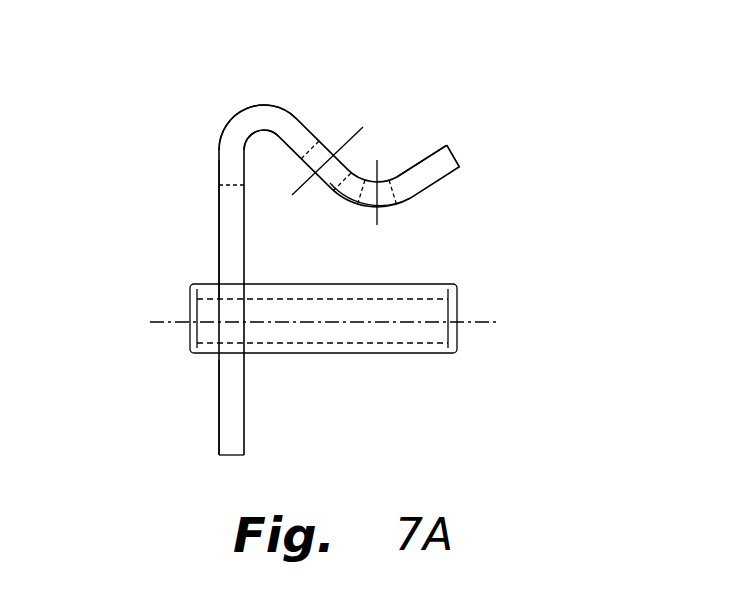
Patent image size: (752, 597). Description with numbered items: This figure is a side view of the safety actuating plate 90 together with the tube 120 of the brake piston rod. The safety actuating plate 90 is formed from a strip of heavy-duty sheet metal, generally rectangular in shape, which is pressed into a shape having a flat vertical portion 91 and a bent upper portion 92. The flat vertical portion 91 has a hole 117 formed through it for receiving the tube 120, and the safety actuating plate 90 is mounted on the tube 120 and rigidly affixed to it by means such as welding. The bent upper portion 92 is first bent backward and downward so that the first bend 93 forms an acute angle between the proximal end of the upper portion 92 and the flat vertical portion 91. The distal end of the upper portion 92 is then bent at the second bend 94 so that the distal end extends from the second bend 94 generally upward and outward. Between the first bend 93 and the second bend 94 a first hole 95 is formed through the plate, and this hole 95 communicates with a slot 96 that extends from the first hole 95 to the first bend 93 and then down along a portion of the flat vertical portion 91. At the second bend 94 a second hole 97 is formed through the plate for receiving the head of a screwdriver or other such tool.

The safety actuating plate 90 is at (222, 432).
The flat vertical portion 91 is at (225, 377).
The bent upper portion 92 is at (300, 100).
The first bend 93 is at (258, 132).
The second bend 94 is at (380, 208).
The first hole 95 is at (318, 137).
The slot 96 is at (217, 160).
The second hole 97 is at (385, 178).
The hole 117 is at (212, 283).
The tube 120 is at (187, 322).